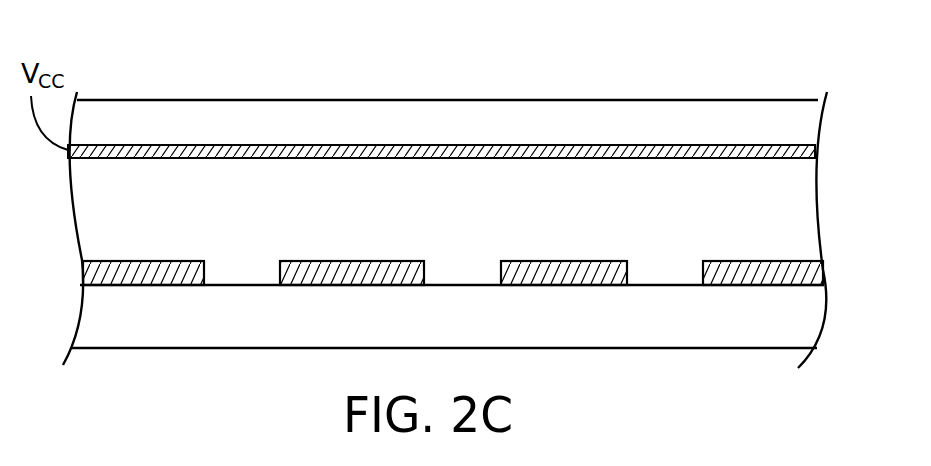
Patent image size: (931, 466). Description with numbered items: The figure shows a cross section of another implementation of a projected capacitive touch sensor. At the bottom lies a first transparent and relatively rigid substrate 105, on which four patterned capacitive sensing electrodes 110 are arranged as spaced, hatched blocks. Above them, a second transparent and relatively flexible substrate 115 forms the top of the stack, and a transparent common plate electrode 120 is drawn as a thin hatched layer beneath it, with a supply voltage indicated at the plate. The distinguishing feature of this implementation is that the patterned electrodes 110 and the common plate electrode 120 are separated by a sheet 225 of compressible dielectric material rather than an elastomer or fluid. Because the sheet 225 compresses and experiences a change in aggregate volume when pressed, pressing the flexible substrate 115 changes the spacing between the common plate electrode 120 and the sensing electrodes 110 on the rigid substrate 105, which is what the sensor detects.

The first substrate 105 is at (820, 310).
The patterned capacitive sensing electrodes 110 is at (125, 261).
The second substrate 115 is at (767, 100).
The transparent common plate electrode 120 is at (607, 158).
The sheet of compressible dielectric material 225 is at (488, 202).